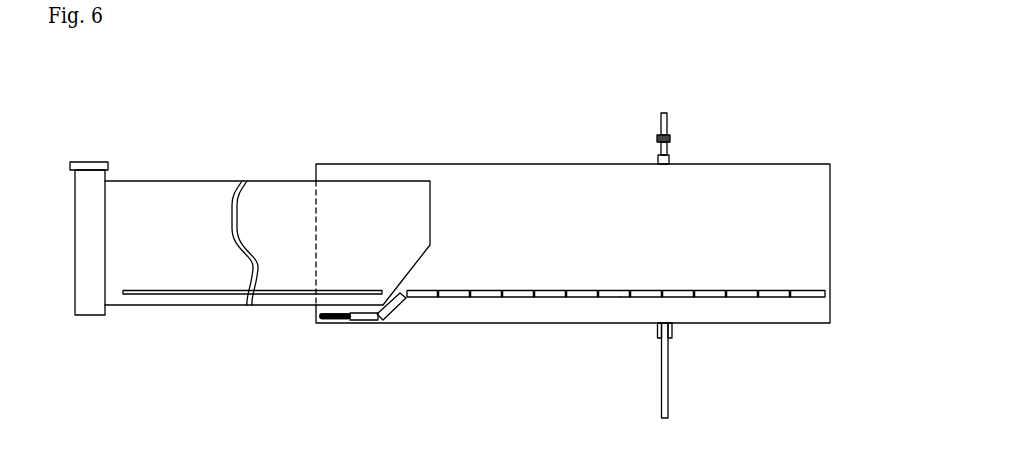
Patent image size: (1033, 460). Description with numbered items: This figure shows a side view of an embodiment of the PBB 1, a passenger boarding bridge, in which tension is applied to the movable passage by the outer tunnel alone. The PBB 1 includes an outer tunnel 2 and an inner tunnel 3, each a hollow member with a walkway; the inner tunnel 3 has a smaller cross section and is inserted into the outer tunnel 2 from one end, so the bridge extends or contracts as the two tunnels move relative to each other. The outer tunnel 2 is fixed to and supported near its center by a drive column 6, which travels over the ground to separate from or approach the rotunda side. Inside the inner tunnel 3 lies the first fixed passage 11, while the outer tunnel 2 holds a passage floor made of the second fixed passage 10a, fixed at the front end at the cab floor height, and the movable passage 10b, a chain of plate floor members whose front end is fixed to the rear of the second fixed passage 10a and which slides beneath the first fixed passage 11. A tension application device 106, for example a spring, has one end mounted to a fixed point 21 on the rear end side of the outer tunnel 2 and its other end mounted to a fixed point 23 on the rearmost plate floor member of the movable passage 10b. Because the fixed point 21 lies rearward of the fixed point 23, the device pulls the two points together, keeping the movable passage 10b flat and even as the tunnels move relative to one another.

The PBB 1 is at (452, 148).
The outer tunnel 2 is at (502, 180).
The inner tunnel 3 is at (272, 190).
The drive column 6 is at (667, 137).
The second fixed passage 10a is at (815, 292).
The movable passage 10b is at (470, 296).
The first fixed passage 11 is at (276, 293).
The fixed point 21 is at (318, 322).
The fixed point 23 is at (350, 320).
The tension application device 106 is at (332, 318).